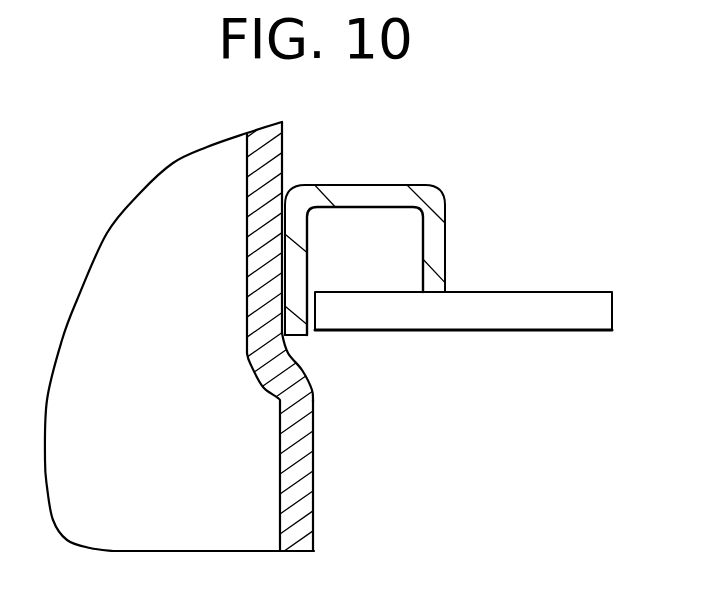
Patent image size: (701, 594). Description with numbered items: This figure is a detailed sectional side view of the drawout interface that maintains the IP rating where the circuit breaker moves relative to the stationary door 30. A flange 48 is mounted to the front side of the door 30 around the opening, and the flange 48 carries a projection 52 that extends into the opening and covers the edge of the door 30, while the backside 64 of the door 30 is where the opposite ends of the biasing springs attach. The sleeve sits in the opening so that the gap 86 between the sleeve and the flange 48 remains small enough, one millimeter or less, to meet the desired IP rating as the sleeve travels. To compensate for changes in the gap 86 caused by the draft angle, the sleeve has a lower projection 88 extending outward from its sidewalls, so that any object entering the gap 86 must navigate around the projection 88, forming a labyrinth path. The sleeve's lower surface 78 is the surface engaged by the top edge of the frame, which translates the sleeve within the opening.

The flange 48 is at (332, 185).
The door 30 is at (500, 292).
The projection 52 is at (305, 336).
The backside 64 is at (520, 331).
The gap 86 is at (297, 352).
The lower projection 88 is at (313, 493).
The lower surface 78 is at (298, 551).